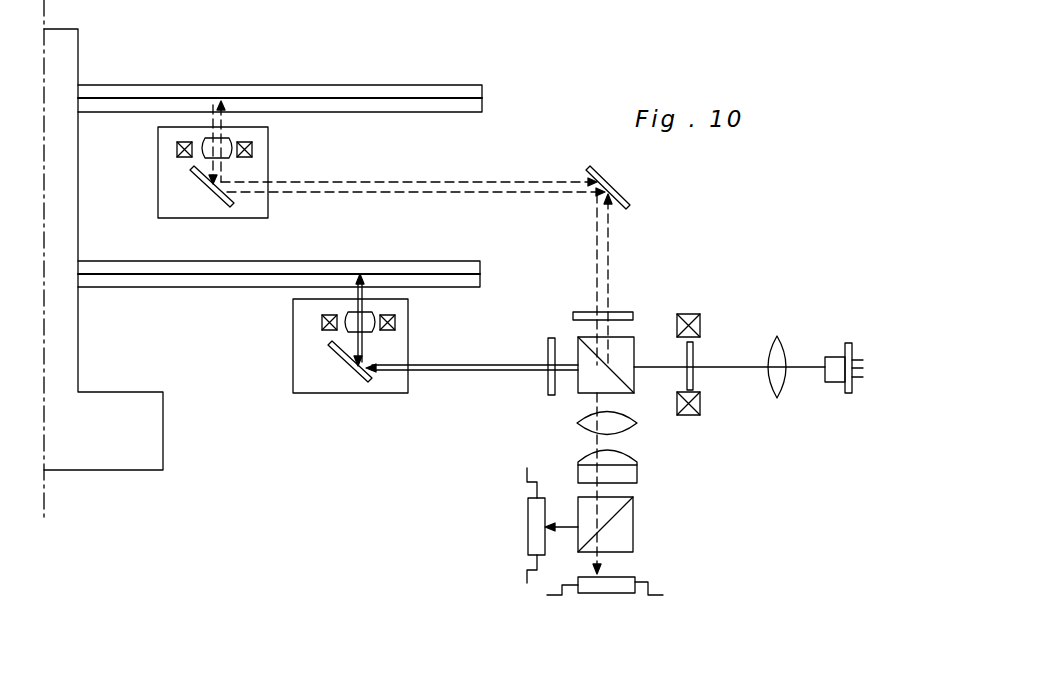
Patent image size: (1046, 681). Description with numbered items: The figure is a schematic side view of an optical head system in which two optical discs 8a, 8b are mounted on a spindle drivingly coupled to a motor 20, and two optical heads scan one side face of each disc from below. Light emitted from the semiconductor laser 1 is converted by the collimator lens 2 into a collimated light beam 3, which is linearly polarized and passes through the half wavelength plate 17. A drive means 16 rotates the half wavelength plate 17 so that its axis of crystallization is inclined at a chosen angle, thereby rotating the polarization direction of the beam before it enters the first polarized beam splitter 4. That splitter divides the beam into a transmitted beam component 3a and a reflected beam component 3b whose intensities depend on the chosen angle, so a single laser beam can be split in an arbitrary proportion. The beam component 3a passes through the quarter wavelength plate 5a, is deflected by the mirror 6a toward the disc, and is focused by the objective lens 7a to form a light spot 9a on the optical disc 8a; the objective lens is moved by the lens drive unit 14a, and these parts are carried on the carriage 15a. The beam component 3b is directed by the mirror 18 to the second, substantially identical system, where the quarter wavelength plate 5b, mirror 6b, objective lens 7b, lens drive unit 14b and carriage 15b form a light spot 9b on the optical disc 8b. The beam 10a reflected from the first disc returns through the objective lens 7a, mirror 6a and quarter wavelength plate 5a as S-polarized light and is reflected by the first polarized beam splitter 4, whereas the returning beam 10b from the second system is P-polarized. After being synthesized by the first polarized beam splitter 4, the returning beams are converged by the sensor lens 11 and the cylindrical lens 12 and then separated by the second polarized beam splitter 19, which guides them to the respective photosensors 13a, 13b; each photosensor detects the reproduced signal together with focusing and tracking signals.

The semiconductor laser 1 is at (835, 357).
The collimator lens 2 is at (780, 338).
The light beam 3 is at (725, 363).
The beam component 3a is at (455, 373).
The beam component 3b is at (460, 192).
The first polarized beam splitter 4 is at (634, 345).
The ¼ wavelength plate 5a is at (547, 382).
The ¼ wavelength plate 5b is at (622, 312).
The mirror 6a is at (352, 373).
The mirror 6b is at (217, 200).
The objective lens 7a is at (345, 328).
The objective lens 7b is at (202, 157).
The optical disc 8a is at (481, 273).
The optical disc 8b is at (483, 98).
The light spot 9a is at (360, 262).
The light spot 9b is at (220, 100).
The reflected beam 10a is at (478, 363).
The reflected beam 10b is at (368, 180).
The sensor lens 11 is at (635, 423).
The cylindrical lens 12 is at (637, 475).
The photosensor 13a is at (528, 523).
The photosensor 13b is at (612, 595).
The lens drive unit 14a is at (322, 322).
The lens drive unit 14b is at (177, 148).
The carriage 15a is at (293, 370).
The carriage 15b is at (158, 208).
The drive means 16 is at (695, 313).
The ½ wavelength plate 17 is at (697, 385).
The mirror 18 is at (606, 183).
The second polarized beam splitter 19 is at (635, 528).
The motor 20 is at (135, 462).